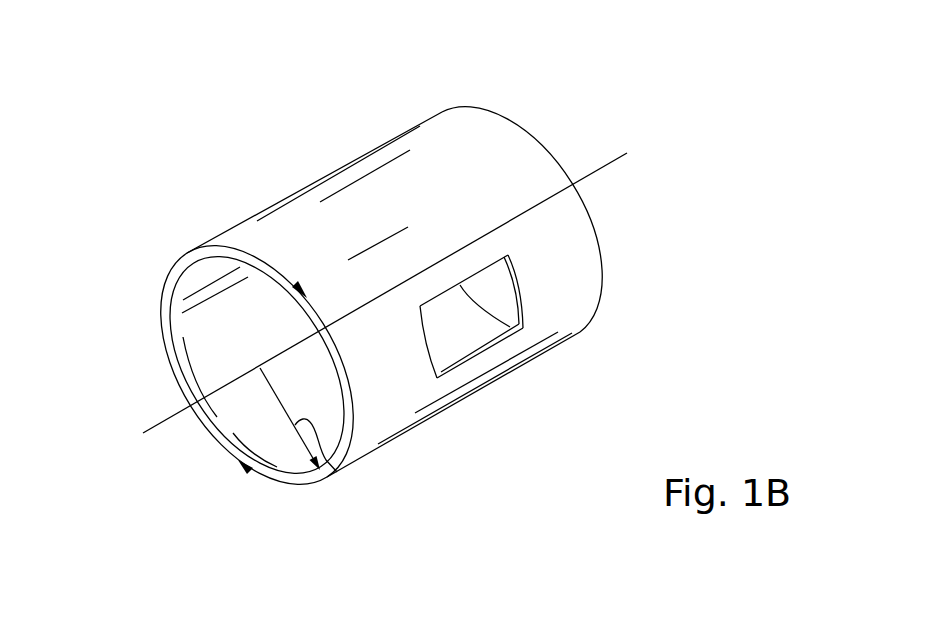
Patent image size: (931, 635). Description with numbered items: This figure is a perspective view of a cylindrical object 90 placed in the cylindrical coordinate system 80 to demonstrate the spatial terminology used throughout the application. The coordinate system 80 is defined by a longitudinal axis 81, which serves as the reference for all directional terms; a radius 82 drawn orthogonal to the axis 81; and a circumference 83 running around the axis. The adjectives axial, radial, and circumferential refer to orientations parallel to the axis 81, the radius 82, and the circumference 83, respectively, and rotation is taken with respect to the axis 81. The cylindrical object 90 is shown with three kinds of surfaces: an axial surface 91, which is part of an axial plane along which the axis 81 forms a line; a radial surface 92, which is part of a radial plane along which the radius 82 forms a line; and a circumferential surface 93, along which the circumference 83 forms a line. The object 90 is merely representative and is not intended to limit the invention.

The cylindrical coordinate system 80 is at (547, 113).
The longitudinal axis 81 is at (155, 430).
The radius 82 is at (336, 466).
The circumference 83 is at (173, 275).
The cylindrical object 90 is at (419, 100).
The axial surface 91 is at (504, 335).
The radial surface 92 is at (274, 477).
The circumferential surface 93 is at (361, 196).